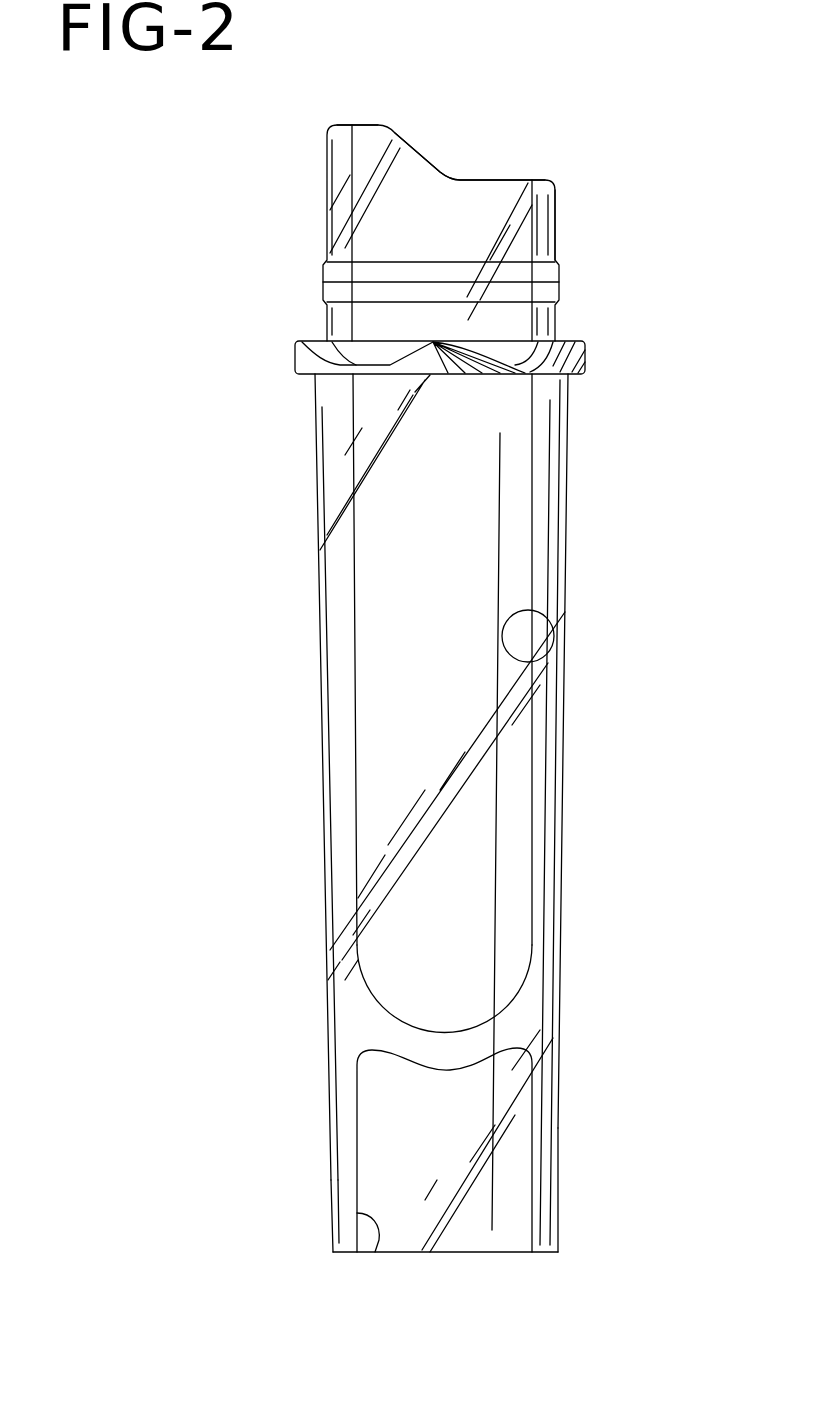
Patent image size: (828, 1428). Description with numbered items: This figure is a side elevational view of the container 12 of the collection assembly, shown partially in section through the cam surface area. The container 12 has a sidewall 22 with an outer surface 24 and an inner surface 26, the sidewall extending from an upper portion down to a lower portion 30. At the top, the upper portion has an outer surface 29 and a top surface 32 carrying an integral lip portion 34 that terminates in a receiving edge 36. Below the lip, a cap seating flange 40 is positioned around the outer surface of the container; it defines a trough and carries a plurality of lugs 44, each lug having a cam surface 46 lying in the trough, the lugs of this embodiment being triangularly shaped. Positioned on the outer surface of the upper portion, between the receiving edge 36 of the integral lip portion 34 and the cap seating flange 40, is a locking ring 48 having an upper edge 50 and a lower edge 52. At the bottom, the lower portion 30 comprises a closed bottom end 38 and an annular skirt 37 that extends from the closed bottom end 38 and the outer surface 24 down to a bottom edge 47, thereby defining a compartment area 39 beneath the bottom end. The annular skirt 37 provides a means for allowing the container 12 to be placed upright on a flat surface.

The container 12 is at (595, 747).
The sidewall 22 is at (548, 511).
The outer surface 24 is at (567, 448).
The inner surface 26 is at (533, 660).
The outer surface 29 is at (368, 207).
The lower portion 30 is at (485, 1005).
The top surface 32 is at (540, 180).
The integral lip portion 34 is at (556, 222).
The receiving edge 36 is at (363, 123).
The annular skirt 37 is at (558, 1128).
The closed bottom end 38 is at (460, 1082).
The compartment area 39 is at (375, 1252).
The cap seating flange 40 is at (297, 358).
The lugs 44 is at (584, 358).
The cam surface 46 is at (574, 374).
The bottom edge 47 is at (525, 1253).
The locking ring 48 is at (559, 282).
The upper edge 50 is at (557, 268).
The lower edge 52 is at (557, 292).